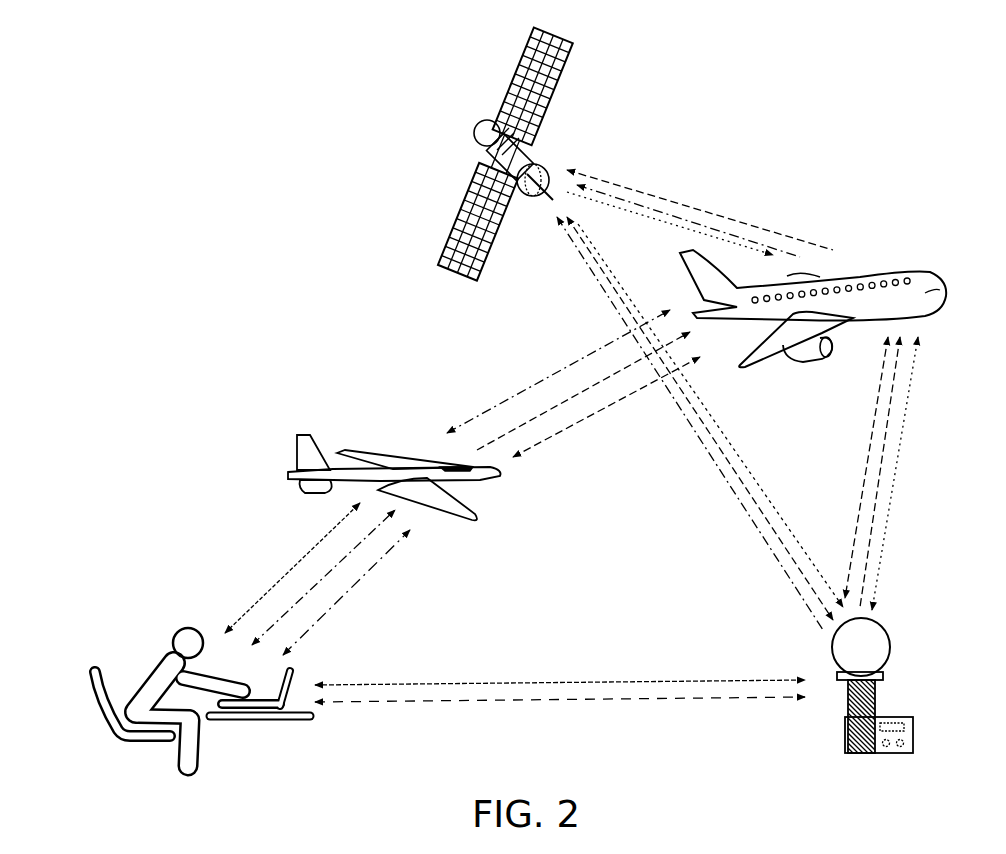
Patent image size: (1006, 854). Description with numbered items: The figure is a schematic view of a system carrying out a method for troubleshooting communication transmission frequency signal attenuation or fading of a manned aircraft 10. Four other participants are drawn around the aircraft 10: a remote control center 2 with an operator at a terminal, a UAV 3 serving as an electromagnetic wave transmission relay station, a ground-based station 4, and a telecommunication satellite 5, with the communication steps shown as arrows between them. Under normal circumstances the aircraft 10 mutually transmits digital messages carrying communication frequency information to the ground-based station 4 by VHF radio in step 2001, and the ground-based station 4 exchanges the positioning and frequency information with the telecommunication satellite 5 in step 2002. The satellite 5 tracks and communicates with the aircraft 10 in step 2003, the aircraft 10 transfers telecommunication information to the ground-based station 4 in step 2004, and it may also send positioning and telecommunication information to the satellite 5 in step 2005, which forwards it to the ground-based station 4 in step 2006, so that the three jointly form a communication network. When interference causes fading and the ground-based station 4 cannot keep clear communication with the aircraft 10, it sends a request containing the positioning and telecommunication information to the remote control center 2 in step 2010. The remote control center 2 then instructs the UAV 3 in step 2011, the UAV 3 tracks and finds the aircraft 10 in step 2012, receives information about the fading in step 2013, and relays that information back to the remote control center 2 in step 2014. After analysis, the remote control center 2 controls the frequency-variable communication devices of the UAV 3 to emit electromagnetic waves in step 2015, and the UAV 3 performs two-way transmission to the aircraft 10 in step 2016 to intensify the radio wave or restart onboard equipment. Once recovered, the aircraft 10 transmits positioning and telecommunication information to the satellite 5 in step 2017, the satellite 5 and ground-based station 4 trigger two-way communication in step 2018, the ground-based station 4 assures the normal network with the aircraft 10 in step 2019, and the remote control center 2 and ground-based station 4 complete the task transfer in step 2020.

The remote control center 2 is at (290, 668).
The UAV 3 is at (312, 447).
The ground-based station 4 is at (913, 718).
The telecommunication satellite 5 is at (557, 90).
The manned aircraft 10 is at (943, 280).
The step of transmitting digital messages to the ground-based station 2001 is at (897, 493).
The step of transmitting positioning and frequency information to the satellite 2002 is at (740, 457).
The step of satellite tracking and communicating with the aircraft 2003 is at (610, 181).
The step of transferring telecommunication information to the ground-based station 2004 is at (877, 407).
The step of transmitting positioning and telecommunication information to the satell 2005 is at (700, 213).
The step of satellite transmitting information to the ground-based station 2006 is at (692, 433).
The step of sending a request to the remote control center 2010 is at (577, 680).
The step of transmitting an instruction to the UAV 2011 is at (333, 613).
The step of UAV tracking and finding the aircraft 2012 is at (580, 422).
The step of receiving attenuation/fading information 2013 is at (557, 403).
The step of transmitting information to the remote control center 2014 is at (327, 567).
The step of controlling the UAV to emit electromagnetic waves 2015 is at (275, 578).
The step of performing the recovering process 2016 is at (510, 400).
The step of transmitting information to the satellite after recovery 2017 is at (683, 228).
The step of two-way communication between satellite and ground-based station 2018 is at (773, 555).
The step of restoring the normal communication network 2019 is at (887, 527).
The step of completing the task transfer 2020 is at (645, 702).